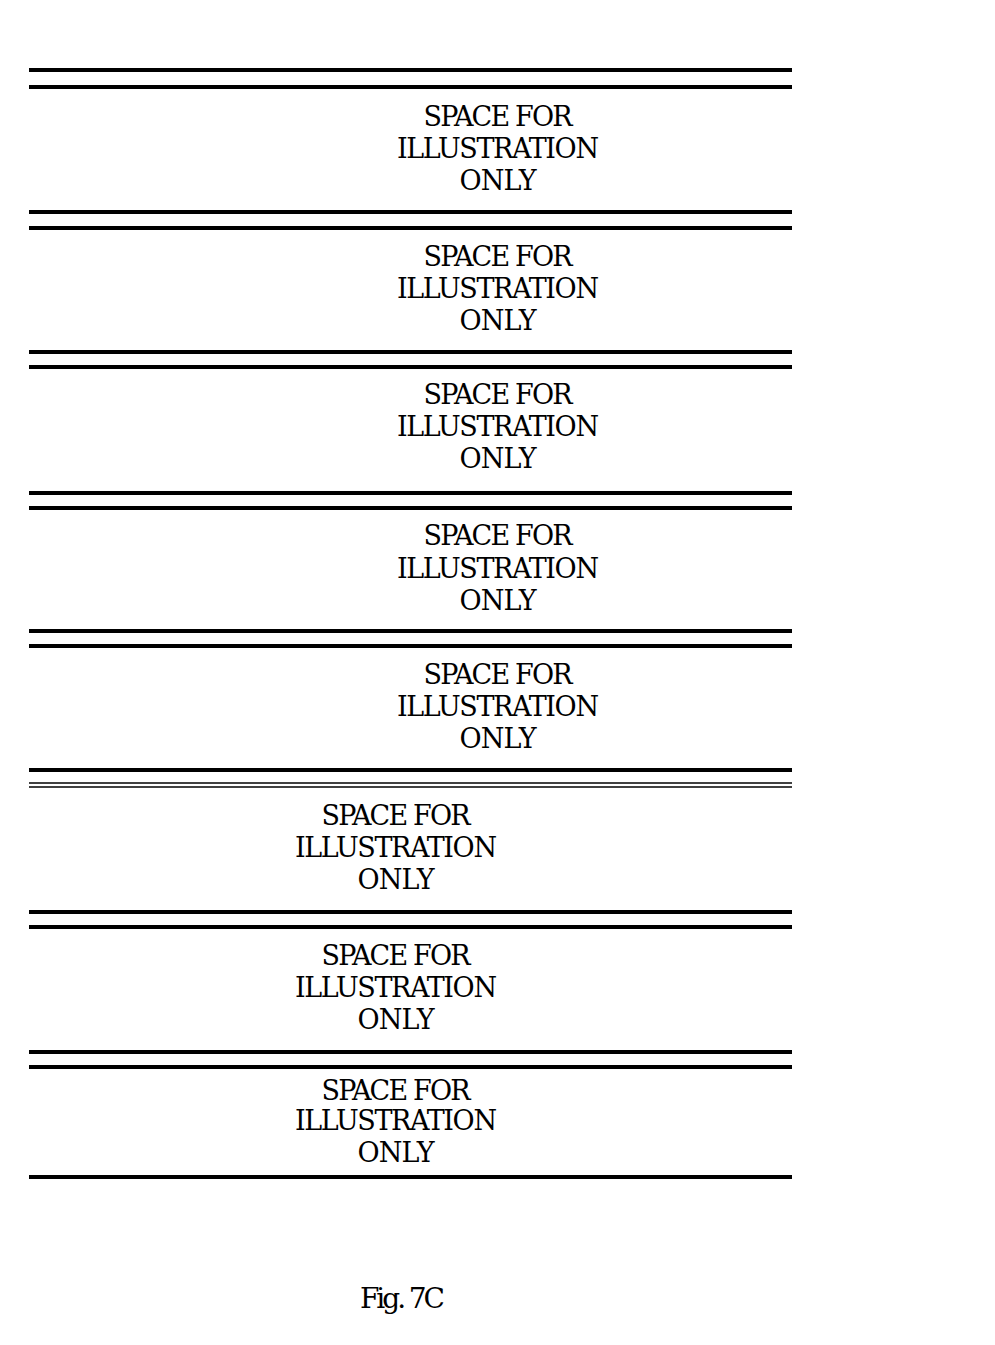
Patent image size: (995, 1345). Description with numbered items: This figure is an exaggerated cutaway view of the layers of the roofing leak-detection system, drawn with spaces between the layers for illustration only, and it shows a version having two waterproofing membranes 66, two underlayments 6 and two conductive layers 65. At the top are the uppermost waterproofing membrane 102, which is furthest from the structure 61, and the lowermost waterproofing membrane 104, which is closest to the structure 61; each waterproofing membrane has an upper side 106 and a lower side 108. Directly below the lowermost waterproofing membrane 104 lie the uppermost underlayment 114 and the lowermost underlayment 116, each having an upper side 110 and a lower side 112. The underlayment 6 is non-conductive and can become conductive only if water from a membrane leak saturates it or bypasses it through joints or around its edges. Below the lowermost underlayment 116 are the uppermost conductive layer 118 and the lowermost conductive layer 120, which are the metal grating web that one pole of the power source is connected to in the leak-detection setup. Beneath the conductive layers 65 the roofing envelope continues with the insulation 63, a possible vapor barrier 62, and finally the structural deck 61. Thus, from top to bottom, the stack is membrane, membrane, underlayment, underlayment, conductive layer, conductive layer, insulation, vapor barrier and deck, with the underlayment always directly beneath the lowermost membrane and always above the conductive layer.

The uppermost waterproofing membrane 102 is at (145, 80).
The lowermost waterproofing membrane 104 is at (145, 222).
The upper side 106 is at (203, 70).
The lower side 108 is at (343, 88).
The upper side 110 is at (202, 352).
The lower side 112 is at (343, 370).
The uppermost underlayment 114 is at (145, 362).
The lowermost underlayment 116 is at (145, 503).
The uppermost conductive layer 118 is at (143, 641).
The lowermost conductive layer 120 is at (143, 781).
The waterproofing membrane 66 is at (615, 80).
The underlayment 6 is at (613, 362).
The conductive layer 65 is at (615, 641).
The insulation 63 is at (505, 921).
The vapor barrier 62 is at (505, 1061).
The structural deck 61 is at (410, 1198).